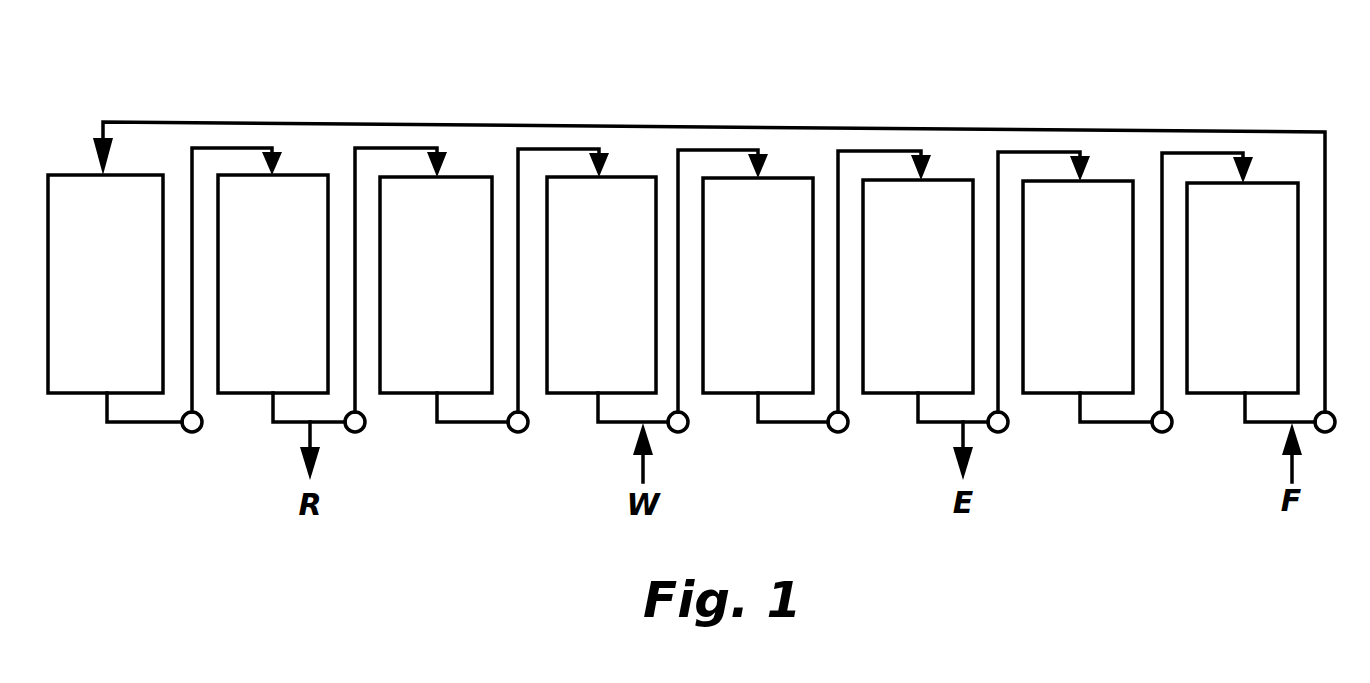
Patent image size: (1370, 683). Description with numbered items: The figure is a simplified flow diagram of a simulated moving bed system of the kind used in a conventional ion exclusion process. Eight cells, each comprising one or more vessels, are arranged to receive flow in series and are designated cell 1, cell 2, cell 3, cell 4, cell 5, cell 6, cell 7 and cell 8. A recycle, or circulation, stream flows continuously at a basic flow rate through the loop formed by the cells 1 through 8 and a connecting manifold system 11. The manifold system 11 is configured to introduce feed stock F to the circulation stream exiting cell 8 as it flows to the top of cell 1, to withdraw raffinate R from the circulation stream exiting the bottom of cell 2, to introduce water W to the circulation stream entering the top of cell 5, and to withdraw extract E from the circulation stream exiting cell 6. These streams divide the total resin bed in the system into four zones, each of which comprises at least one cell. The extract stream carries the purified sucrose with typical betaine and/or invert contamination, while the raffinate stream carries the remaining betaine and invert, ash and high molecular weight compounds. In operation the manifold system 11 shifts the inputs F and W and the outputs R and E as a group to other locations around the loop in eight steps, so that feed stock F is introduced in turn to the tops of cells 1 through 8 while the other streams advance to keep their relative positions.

The cell 1 is at (165, 290).
The cell 2 is at (332, 290).
The cell 3 is at (494, 290).
The cell 4 is at (657, 291).
The cell 5 is at (817, 291).
The cell 6 is at (976, 292).
The cell 7 is at (1138, 292).
The cell 8 is at (1261, 307).
The manifold system 11 is at (748, 90).